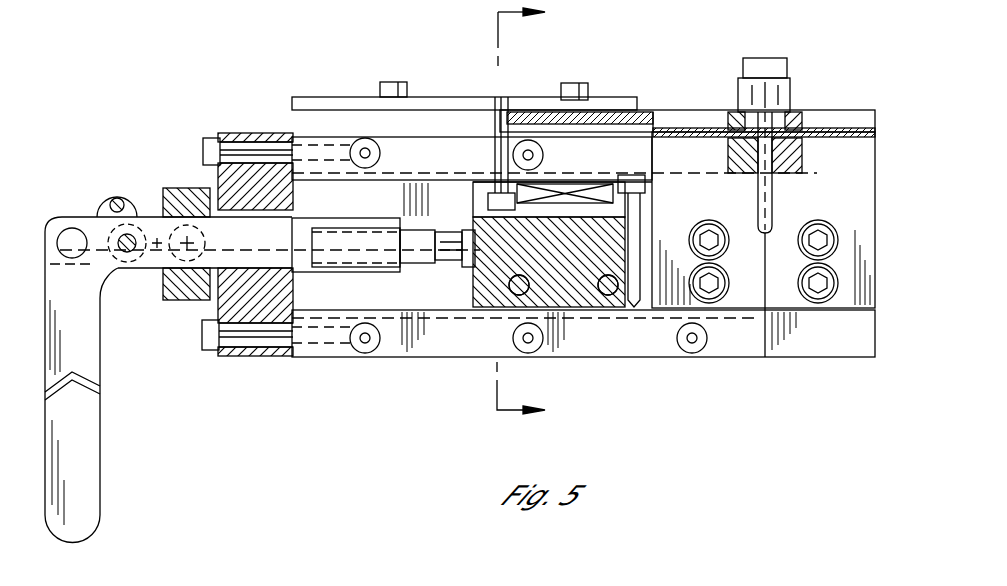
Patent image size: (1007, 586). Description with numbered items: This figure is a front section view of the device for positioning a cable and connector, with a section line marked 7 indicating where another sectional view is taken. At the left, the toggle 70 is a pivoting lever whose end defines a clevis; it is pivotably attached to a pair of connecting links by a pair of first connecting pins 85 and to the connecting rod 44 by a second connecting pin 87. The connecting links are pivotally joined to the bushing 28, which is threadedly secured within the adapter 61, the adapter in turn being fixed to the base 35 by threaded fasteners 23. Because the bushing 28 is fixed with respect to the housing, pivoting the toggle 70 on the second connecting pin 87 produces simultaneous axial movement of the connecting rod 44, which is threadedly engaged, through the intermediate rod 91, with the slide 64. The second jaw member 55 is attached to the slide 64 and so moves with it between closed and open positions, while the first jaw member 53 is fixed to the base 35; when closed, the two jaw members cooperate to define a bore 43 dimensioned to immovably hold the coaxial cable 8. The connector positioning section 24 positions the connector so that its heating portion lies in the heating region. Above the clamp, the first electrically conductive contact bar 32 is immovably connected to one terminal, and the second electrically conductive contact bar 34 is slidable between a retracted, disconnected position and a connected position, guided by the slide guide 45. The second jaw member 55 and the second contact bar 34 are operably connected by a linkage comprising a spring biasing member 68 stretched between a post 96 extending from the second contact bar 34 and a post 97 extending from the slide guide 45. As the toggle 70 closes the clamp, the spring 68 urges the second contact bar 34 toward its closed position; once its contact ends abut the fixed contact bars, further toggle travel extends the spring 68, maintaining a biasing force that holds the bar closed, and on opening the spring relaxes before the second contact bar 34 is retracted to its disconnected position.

The section line 7- 7 is at (540, 214).
The coaxial cable 8 is at (774, 200).
The threaded fasteners 23 is at (205, 150).
The connector positioning section 24 is at (826, 140).
The bushing 28 is at (182, 302).
The first electrically conductive contact bar 32 is at (843, 110).
The second electrically conductive contact bar 34 is at (684, 110).
The base 35 is at (383, 292).
The bore 43 is at (740, 158).
The connecting rod 44 is at (370, 275).
The slide guide 45 is at (580, 280).
The first jaw member 53 is at (787, 290).
The second jaw member 55 is at (742, 265).
The adapter 61 is at (250, 134).
The slide 64 is at (476, 204).
The spring biasing member 68 is at (562, 184).
The toggle 70 is at (88, 432).
The first connecting pins 85 is at (70, 230).
The second connecting pin 87 is at (127, 253).
The intermediate rod 91 is at (410, 216).
The post 96 is at (495, 150).
The post 97 is at (648, 216).